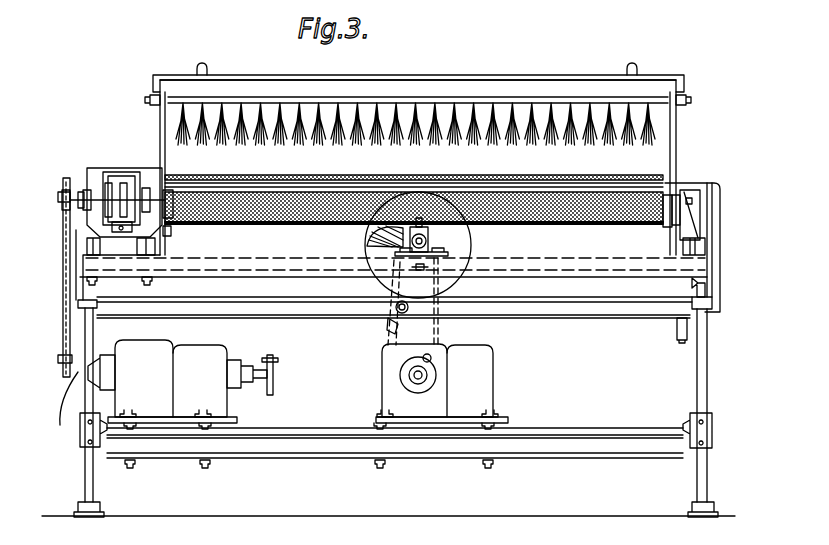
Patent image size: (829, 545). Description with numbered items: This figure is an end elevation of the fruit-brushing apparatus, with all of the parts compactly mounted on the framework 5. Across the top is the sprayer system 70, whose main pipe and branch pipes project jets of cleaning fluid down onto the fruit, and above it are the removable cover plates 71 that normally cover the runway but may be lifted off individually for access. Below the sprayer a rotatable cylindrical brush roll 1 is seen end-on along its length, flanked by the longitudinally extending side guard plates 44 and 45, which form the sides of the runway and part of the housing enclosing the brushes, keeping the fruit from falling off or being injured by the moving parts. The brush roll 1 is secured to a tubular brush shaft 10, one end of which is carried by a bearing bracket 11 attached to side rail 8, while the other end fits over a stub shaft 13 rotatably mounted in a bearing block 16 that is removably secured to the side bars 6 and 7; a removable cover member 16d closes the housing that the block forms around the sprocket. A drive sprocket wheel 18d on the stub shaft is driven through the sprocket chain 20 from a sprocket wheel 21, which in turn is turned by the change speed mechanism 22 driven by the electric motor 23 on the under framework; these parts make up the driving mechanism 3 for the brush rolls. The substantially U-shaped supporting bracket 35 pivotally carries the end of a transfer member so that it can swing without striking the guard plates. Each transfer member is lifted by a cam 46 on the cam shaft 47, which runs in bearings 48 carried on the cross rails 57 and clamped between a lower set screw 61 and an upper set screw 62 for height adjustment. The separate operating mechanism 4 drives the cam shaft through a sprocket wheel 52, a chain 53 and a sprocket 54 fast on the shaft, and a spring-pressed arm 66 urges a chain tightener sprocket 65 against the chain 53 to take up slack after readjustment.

The brush roll 1 is at (250, 176).
The driving mechanism 3 is at (53, 384).
The operating mechanism 4 is at (512, 361).
The framework 5 is at (716, 389).
The side bar 6 is at (87, 252).
The side bar 7 is at (146, 256).
The side rail 8 is at (683, 247).
The tubular brush shaft 10 is at (700, 187).
The bearing bracket 11 is at (698, 224).
The stub shaft 13 is at (82, 192).
The bearing block 16 is at (97, 211).
The cover member 16d is at (113, 172).
The drive sprocket wheel 18d is at (72, 190).
The sprocket chain 20 is at (63, 338).
The sprocket wheel 21 is at (61, 409).
The change speed mechanism 22 is at (152, 350).
The electric motor 23 is at (232, 357).
The supporting bracket 35 is at (172, 236).
The side guard plate 44 is at (160, 128).
The side guard plate 45 is at (678, 147).
The cam 46 is at (458, 288).
The cam shaft 47 is at (446, 245).
The bearing 48 is at (432, 228).
The sprocket wheel 52 is at (440, 380).
The chain 53 is at (440, 337).
The sprocket 54 is at (384, 243).
The cross rail 57 is at (573, 262).
The set screw 61 is at (382, 282).
The set screw 62 is at (422, 220).
The chain tightener sprocket 65 is at (392, 345).
The arm 66 is at (395, 326).
The sprayer system 70 is at (411, 92).
The cover plate 71 is at (497, 74).